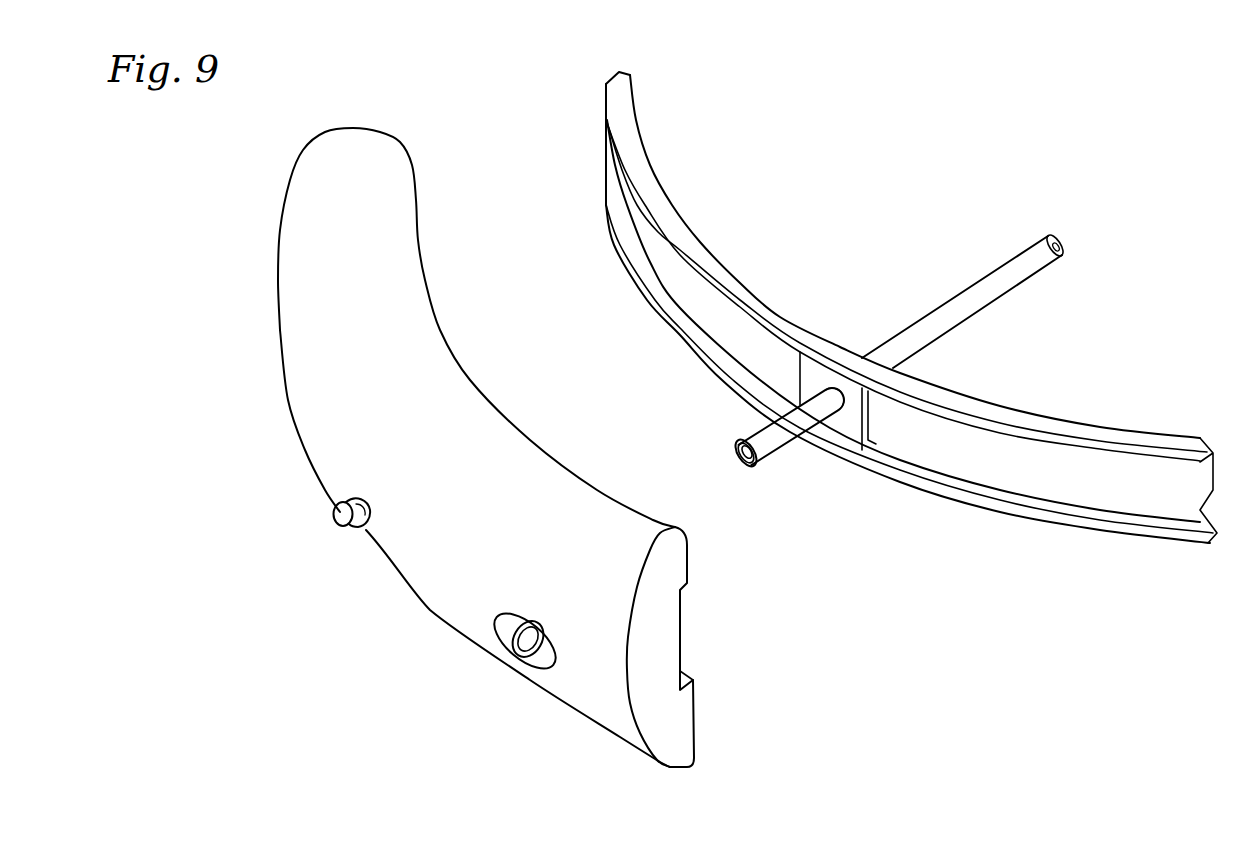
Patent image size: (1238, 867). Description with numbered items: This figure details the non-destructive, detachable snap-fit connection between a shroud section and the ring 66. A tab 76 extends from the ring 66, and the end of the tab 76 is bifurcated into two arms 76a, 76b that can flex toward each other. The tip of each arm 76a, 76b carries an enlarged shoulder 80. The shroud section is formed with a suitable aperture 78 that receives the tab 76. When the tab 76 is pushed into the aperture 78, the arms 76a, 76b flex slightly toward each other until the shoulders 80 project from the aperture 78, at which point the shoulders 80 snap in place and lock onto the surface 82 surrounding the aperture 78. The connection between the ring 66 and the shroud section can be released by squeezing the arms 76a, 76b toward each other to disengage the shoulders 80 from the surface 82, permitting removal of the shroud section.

The ring 66 is at (996, 520).
The tab 76 is at (757, 488).
The arm 76a is at (762, 427).
The arm 76b is at (777, 440).
The aperture 78 is at (512, 652).
The enlarged shoulder 80 is at (733, 462).
The surface 82 is at (542, 660).